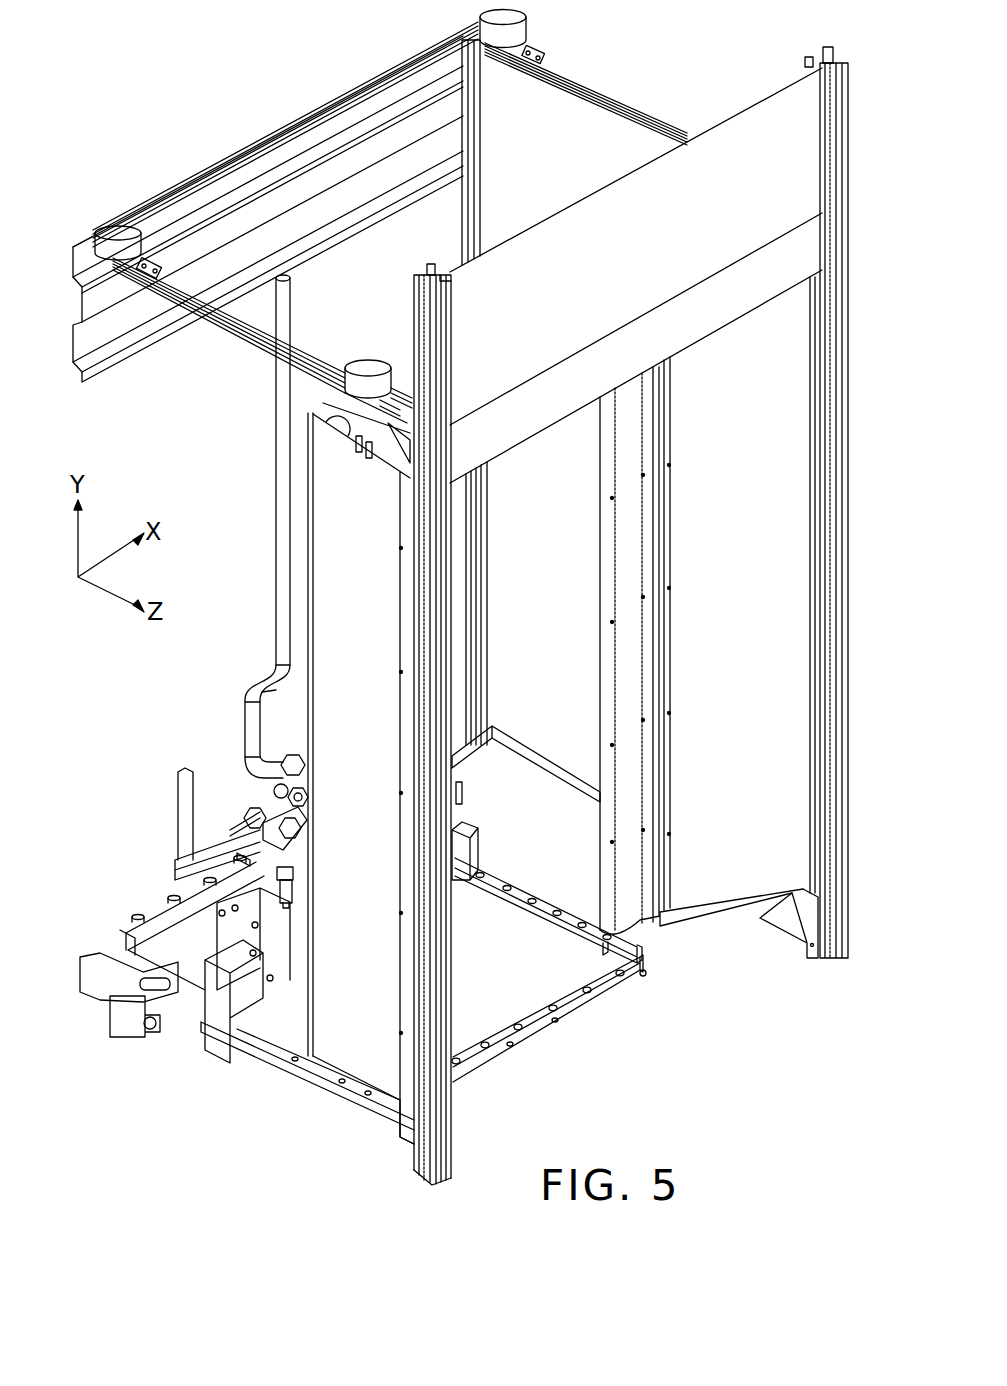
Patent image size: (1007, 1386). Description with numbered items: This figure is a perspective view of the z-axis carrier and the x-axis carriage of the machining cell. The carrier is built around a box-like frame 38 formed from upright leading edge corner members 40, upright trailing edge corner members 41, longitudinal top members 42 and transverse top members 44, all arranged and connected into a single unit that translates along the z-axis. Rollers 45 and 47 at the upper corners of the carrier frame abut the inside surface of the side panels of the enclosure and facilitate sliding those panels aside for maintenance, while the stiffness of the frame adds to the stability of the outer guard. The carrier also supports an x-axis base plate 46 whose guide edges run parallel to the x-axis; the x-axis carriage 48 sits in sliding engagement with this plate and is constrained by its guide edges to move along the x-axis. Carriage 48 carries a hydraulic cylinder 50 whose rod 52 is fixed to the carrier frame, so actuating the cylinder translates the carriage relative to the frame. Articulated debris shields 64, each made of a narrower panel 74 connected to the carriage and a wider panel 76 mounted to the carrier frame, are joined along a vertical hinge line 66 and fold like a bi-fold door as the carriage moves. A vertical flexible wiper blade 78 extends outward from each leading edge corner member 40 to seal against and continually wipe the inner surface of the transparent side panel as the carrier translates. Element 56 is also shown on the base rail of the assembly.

The frame 38 is at (147, 685).
The upright leading edge corner member 40 is at (838, 372).
The upright trailing edge corner member 41 is at (467, 207).
The longitudinal top member 42 is at (238, 330).
The transverse top member 44 is at (283, 132).
The roller 45 is at (357, 382).
The x-axis base plate 46 is at (322, 1092).
The roller 47 is at (150, 244).
The x-axis carriage 48 is at (560, 968).
The hydraulic cylinder 50 is at (298, 974).
The rod 52 is at (215, 1012).
The front base rail 56 is at (540, 1012).
The articulated debris shield 64 is at (332, 573).
The vertical hinge line 66 is at (658, 775).
The articulated panel 74 is at (318, 424).
The articulated panel 76 is at (316, 488).
The vertical flexible wiper blade 78 is at (420, 303).